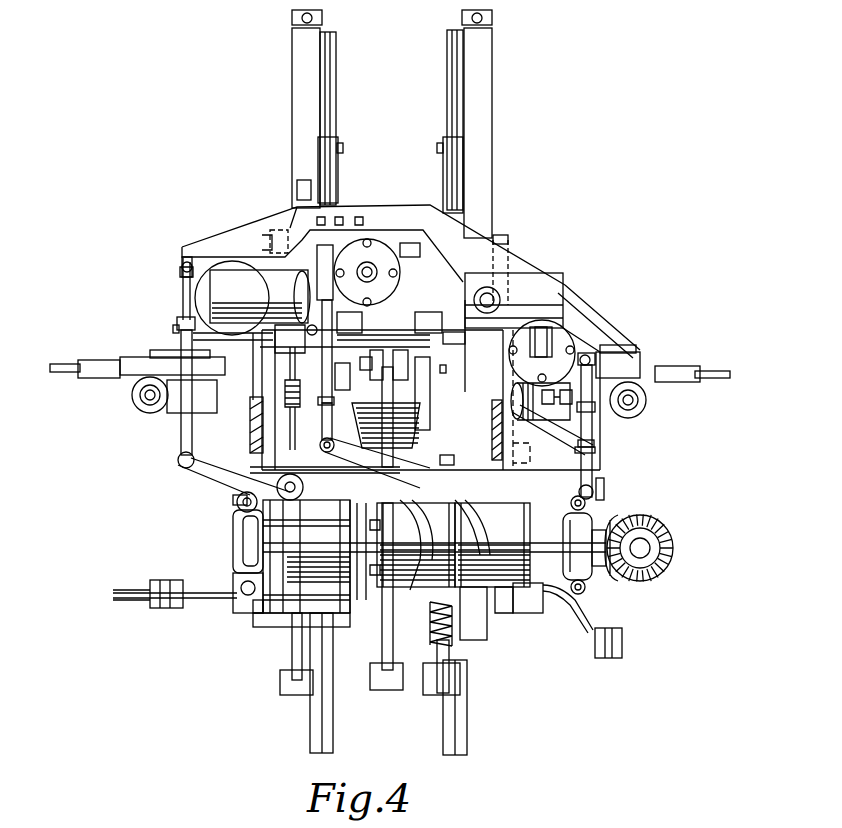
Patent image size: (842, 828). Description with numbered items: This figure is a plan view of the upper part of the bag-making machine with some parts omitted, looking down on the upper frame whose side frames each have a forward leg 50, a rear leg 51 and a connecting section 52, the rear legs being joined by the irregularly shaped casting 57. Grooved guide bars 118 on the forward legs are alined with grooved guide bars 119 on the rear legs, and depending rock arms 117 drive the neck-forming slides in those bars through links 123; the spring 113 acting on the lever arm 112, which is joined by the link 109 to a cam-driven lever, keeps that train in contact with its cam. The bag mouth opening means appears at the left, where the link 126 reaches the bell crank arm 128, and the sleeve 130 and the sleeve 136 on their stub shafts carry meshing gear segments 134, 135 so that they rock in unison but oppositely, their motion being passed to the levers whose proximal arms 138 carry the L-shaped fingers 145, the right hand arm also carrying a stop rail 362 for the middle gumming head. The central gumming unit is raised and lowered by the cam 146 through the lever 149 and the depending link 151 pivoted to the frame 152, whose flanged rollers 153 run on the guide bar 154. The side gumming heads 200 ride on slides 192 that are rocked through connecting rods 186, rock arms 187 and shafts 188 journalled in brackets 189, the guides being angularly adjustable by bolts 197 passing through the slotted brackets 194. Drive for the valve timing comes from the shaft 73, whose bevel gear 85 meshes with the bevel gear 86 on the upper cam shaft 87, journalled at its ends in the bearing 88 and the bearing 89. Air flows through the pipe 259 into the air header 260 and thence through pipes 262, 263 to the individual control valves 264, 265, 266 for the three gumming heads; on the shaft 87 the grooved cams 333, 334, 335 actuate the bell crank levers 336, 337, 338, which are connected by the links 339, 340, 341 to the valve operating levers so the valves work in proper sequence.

The grooved guide bar 119 is at (333, 58).
The rock arm 117 is at (330, 163).
The link 123 is at (440, 170).
The casting 57 is at (453, 237).
The rear leg 51 is at (270, 237).
The pipe 262 is at (370, 262).
The individual control valve 265 is at (393, 267).
The roller 153 is at (363, 325).
The guide bar 154 is at (425, 312).
The pipe 259 is at (498, 292).
The air header 260 is at (560, 275).
The pipe 263 is at (556, 338).
The individual control valve 266 is at (580, 338).
The bracket 189 is at (640, 362).
The bolt 197 is at (641, 370).
The bracket 194 is at (136, 372).
The slide 192 is at (66, 364).
The side gumming head 200 is at (148, 418).
The link 340 is at (285, 370).
The link 341 is at (594, 434).
The shaft 188 is at (592, 452).
The forward leg 50 is at (597, 473).
The bell crank lever 336 is at (207, 471).
The connecting section 52 is at (277, 487).
The bell crank lever 337 is at (237, 506).
The bearing 89 is at (247, 541).
The rock arm 187 is at (208, 575).
The connecting rod 186 is at (130, 582).
The link 126 is at (292, 697).
The grooved cam 333 is at (293, 620).
The grooved guide bar 118 is at (305, 638).
The bell crank arm 128 is at (292, 665).
The lever 149 is at (382, 650).
The cam 146 is at (380, 690).
The lever arm 112 is at (458, 662).
The link 109 is at (430, 700).
The coiled tension spring 113 is at (455, 638).
The grooved cam 335 is at (500, 596).
The grooved cam 334 is at (422, 605).
The shaft 73 is at (652, 550).
The bevel gear 85 is at (648, 578).
The bevel gear 86 is at (605, 570).
The upper cam shaft 87 is at (585, 520).
The bearing 88 is at (600, 520).
The bell crank lever 338 is at (503, 480).
The proximal arm 138 is at (450, 353).
The stop rail 362 is at (446, 369).
The frame 152 is at (413, 381).
The L-shaped finger 145 is at (335, 378).
The depending link 151 is at (386, 417).
The gear segment 135 is at (287, 360).
The gear segment 134 is at (262, 415).
The sleeve 130 is at (250, 452).
The sleeve 136 is at (212, 292).
The individual control valve 264 is at (185, 303).
The link 339 is at (178, 322).